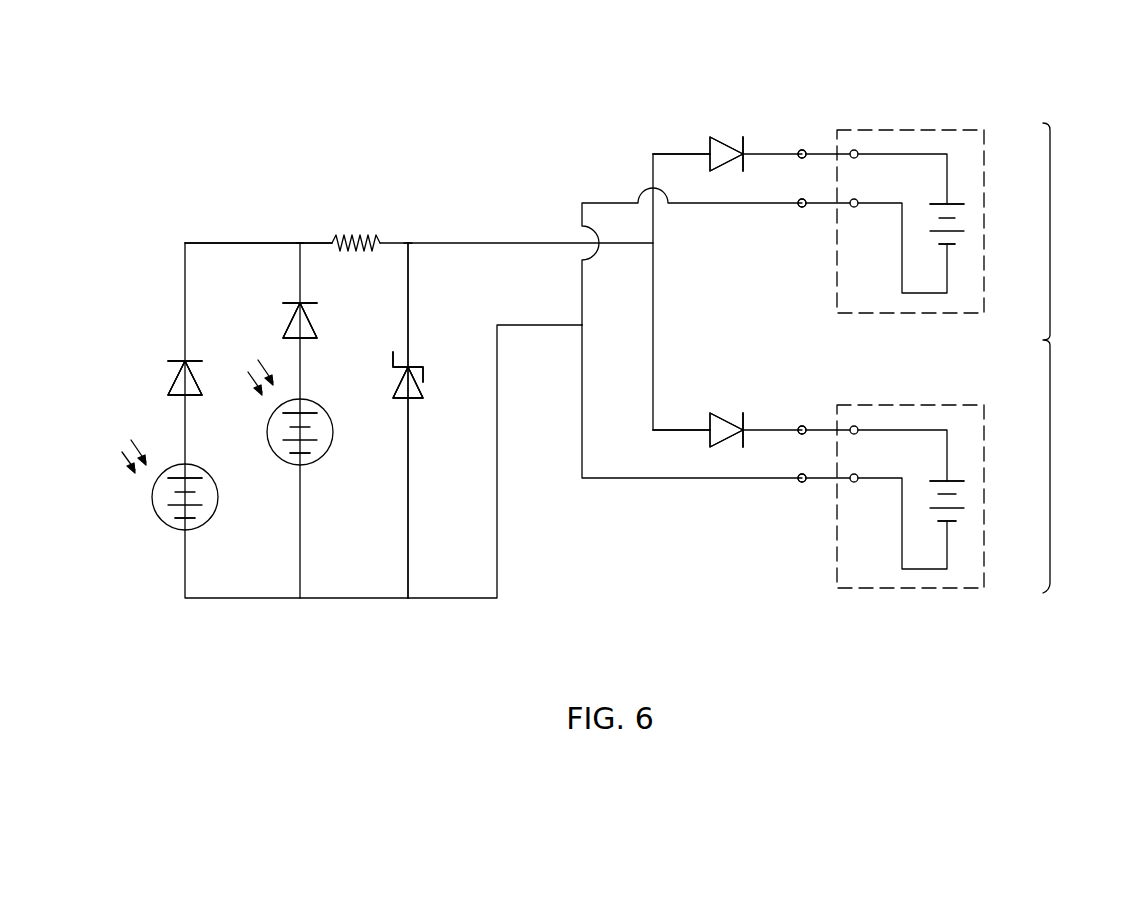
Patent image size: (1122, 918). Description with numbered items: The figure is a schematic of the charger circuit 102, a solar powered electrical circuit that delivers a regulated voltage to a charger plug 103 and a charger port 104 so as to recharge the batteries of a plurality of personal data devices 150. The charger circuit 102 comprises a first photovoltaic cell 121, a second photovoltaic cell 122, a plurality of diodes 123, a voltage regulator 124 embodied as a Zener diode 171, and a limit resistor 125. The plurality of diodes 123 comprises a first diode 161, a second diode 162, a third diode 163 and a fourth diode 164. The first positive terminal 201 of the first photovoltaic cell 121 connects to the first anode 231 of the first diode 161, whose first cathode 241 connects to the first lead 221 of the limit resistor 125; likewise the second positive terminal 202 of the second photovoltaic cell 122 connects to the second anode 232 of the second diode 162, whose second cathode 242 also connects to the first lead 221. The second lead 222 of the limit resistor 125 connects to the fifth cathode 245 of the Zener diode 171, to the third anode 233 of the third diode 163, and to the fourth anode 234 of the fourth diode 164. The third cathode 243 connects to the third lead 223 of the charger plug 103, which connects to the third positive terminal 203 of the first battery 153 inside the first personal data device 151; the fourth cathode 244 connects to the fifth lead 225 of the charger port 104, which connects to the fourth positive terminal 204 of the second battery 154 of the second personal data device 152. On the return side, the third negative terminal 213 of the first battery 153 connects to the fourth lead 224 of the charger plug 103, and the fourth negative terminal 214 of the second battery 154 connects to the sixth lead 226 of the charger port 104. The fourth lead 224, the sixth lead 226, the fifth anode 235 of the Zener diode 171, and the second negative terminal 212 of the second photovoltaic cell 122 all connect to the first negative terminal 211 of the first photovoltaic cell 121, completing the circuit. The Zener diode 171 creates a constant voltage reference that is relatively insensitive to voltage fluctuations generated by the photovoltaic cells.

The charger circuit 102 is at (150, 128).
The charger plug 103 is at (802, 150).
The charger port 104 is at (808, 492).
The first photovoltaic cell 121 is at (180, 530).
The second photovoltaic cell 122 is at (310, 468).
The plurality of diodes 123 is at (197, 355).
The voltage regulator 124 is at (418, 450).
The limit resistor 125 is at (345, 240).
The plurality of personal data devices 150 is at (956, 340).
The first personal data device 151 is at (945, 129).
The second personal data device 152 is at (920, 405).
The first battery 153 is at (958, 218).
The second battery 154 is at (956, 508).
The first diode 161 is at (191, 383).
The second diode 162 is at (295, 300).
The third diode 163 is at (718, 137).
The fourth diode 164 is at (728, 412).
The Zener diode 171 is at (396, 395).
The first positive terminal 201 is at (187, 466).
The second positive terminal 202 is at (304, 404).
The third positive terminal 203 is at (948, 200).
The fourth positive terminal 204 is at (950, 458).
The first negative terminal 211 is at (190, 528).
The second negative terminal 212 is at (300, 468).
The third negative terminal 213 is at (948, 250).
The fourth negative terminal 214 is at (950, 540).
The first lead 221 is at (300, 242).
The second lead 222 is at (410, 240).
The third lead 223 is at (806, 150).
The fourth lead 224 is at (802, 207).
The fifth lead 225 is at (802, 425).
The sixth lead 226 is at (802, 486).
The first anode 231 is at (183, 404).
The second anode 232 is at (304, 342).
The third anode 233 is at (682, 153).
The fourth anode 234 is at (664, 476).
The fifth anode 235 is at (410, 436).
The first cathode 241 is at (183, 366).
The second cathode 242 is at (305, 300).
The third cathode 243 is at (750, 150).
The fourth cathode 244 is at (755, 436).
The fifth cathode 245 is at (410, 340).